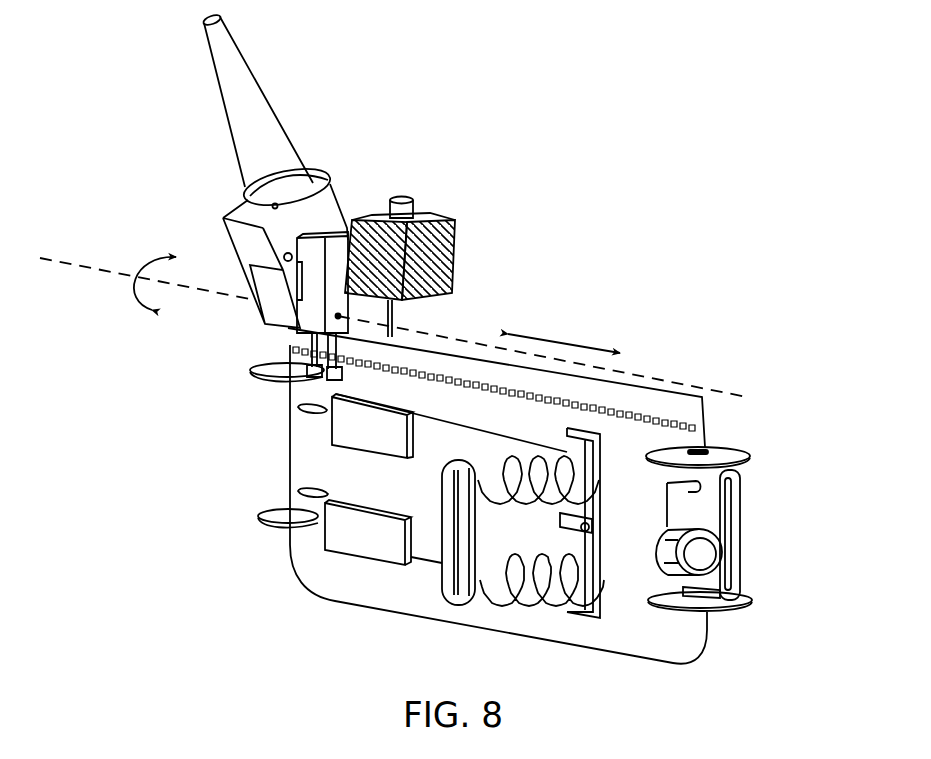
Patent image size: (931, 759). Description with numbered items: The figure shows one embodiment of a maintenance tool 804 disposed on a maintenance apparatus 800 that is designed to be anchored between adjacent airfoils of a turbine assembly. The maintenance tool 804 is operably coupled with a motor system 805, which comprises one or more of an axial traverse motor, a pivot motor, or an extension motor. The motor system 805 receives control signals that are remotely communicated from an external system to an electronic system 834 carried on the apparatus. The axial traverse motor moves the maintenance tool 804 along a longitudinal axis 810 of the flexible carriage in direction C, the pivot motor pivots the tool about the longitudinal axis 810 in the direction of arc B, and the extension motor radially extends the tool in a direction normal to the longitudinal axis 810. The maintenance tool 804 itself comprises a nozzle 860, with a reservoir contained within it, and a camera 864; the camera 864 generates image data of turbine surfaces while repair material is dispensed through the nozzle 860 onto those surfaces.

The maintenance apparatus 800 is at (450, 338).
The maintenance tool 804 is at (347, 196).
The motor system 805 is at (419, 226).
The longitudinal axis 810 is at (72, 260).
The electronic system 834 is at (432, 456).
The nozzle 860 is at (250, 64).
The camera 864 is at (453, 187).